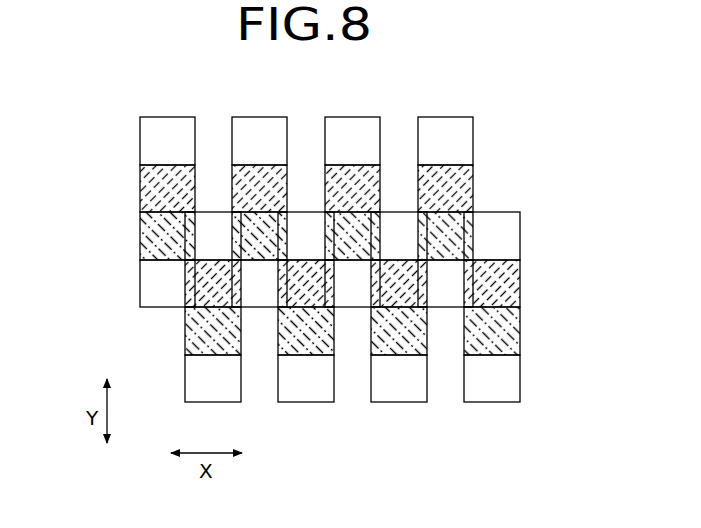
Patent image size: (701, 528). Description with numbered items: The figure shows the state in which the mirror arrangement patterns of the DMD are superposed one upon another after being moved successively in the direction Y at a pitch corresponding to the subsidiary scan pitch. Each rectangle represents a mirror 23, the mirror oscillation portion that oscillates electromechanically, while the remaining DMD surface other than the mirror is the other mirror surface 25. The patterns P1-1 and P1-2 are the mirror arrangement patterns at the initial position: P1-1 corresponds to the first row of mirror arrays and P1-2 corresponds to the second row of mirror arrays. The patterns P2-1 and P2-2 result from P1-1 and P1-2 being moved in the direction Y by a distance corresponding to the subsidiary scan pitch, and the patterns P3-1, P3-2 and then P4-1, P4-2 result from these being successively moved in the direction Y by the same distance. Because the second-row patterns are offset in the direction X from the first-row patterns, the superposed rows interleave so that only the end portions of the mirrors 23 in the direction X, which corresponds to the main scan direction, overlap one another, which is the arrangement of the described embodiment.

The mirror oscillation portion 23 is at (323, 239).
The other mirror surface 25 is at (476, 176).
The mirror arrangement pattern at the initial position P1-1 is at (130, 143).
The mirror arrangement pattern P2-1 is at (284, 188).
The mirror arrangement pattern P3-1 is at (130, 236).
The mirror arrangement pattern P4-1 is at (130, 283).
The mirror arrangement pattern at the initial position P1-2 is at (534, 235).
The mirror arrangement pattern P2-2 is at (534, 283).
The mirror arrangement pattern P3-2 is at (534, 330).
The mirror arrangement pattern P4-2 is at (534, 378).